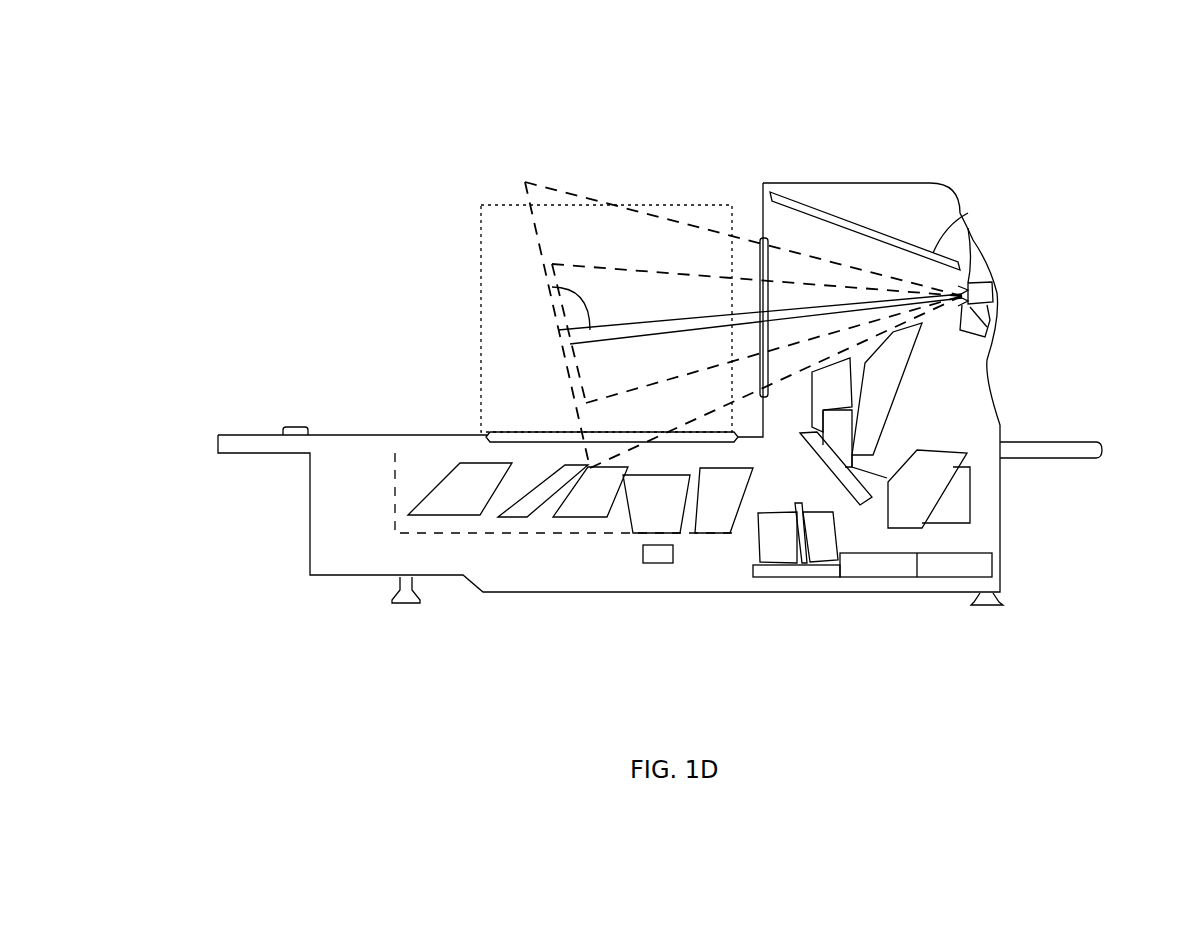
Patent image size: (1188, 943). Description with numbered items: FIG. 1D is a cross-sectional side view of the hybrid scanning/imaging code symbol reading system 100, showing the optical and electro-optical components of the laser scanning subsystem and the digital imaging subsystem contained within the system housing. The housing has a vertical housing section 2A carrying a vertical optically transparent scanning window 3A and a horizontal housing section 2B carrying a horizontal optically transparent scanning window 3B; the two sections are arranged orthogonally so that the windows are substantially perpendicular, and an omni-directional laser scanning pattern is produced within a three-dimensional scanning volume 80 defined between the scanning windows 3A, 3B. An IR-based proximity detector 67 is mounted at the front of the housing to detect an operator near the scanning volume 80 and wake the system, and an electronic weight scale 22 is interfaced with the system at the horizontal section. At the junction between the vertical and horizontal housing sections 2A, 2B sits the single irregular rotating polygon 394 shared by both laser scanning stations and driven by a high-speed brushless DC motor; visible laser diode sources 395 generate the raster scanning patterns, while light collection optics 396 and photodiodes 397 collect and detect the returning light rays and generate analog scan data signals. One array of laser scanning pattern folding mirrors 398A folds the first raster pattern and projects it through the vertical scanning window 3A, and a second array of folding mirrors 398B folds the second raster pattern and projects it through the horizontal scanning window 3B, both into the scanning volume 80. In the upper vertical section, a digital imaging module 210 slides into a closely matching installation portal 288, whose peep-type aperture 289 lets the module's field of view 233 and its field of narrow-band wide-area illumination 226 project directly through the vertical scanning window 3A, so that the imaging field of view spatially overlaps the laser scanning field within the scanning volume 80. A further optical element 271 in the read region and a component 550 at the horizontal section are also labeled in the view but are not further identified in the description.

The hybrid scanning/imaging code symbol reading system 100 is at (250, 641).
The vertical housing section 2A is at (848, 183).
The horizontal housing section 2B is at (310, 527).
The vertical scanning window 3A is at (762, 240).
The horizontal scanning window 3B is at (513, 432).
The electronic weight scale 22 is at (332, 477).
The IR-based proximity detector 67 is at (295, 426).
The 3D scanning volume 80 is at (482, 240).
The field of narrow-band wide-area illumination 226 is at (550, 185).
The field of view 233 is at (637, 267).
The mirror assembly 271 is at (550, 288).
The digital imaging module 210 is at (993, 288).
The installation portal 288 is at (967, 260).
The peep-type aperture 289 is at (982, 337).
The laser scanning pattern folding mirrors 398A is at (938, 250).
The laser scanning pattern folding mirrors 398B is at (582, 516).
The visible laser diode sources 395 is at (657, 543).
The rotating polygon 394 is at (757, 555).
The photodiodes 397 is at (948, 487).
The light collection optics 396 is at (970, 513).
The counter surface 550 is at (387, 437).